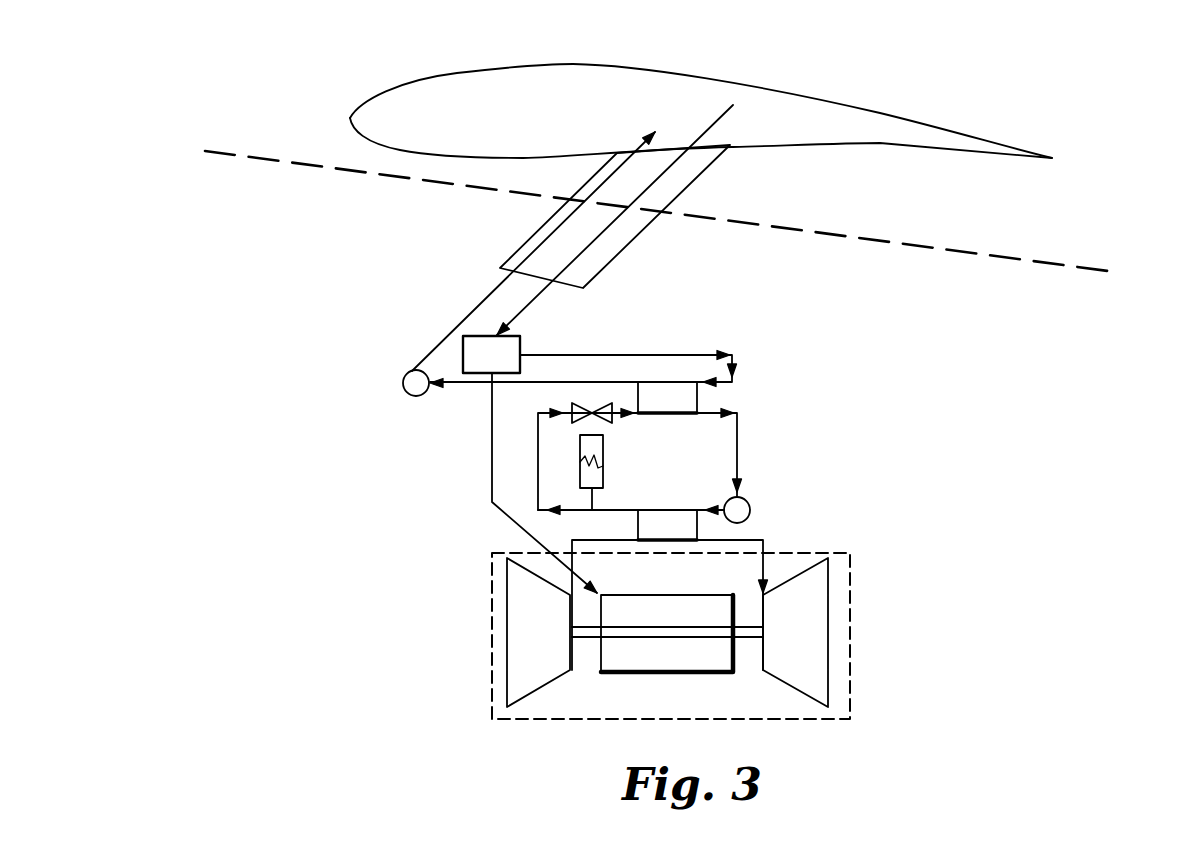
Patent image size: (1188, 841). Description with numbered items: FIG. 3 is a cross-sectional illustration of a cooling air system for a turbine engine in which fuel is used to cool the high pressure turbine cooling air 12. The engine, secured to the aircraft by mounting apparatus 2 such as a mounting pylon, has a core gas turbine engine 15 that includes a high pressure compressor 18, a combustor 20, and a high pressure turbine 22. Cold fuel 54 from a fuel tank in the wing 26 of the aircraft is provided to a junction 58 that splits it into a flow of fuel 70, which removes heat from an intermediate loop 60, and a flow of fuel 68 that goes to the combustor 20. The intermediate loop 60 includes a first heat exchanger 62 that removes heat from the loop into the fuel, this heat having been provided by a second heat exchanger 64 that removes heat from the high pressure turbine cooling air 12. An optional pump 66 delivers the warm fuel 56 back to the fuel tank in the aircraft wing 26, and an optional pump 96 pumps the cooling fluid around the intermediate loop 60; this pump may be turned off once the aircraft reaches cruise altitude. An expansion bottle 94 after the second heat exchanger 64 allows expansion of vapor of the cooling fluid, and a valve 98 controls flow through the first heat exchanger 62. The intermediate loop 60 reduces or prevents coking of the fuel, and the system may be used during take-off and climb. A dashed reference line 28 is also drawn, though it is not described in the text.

The mounting apparatus 2 is at (527, 240).
The high pressure turbine cooling air 12 is at (767, 565).
The core gas turbine engine 15 is at (485, 592).
The high pressure compressor 18 is at (540, 690).
The combustor 20 is at (737, 672).
The high pressure turbine 22 is at (830, 572).
The wing 26 is at (350, 118).
The fuselage axis 28 is at (1108, 271).
The cold fuel 54 is at (655, 178).
The warm fuel 56 is at (448, 332).
The junction 58 is at (520, 340).
The intermediate loop 60 is at (775, 437).
The first heat exchanger 62 is at (673, 400).
The second heat exchanger 64 is at (660, 513).
The pump 66 is at (408, 393).
The flow of fuel to the combustor 68 is at (490, 438).
The flow of fuel 70 is at (732, 366).
The expansion bottle 94 is at (603, 470).
The pump 96 is at (750, 505).
The valve 98 is at (572, 405).